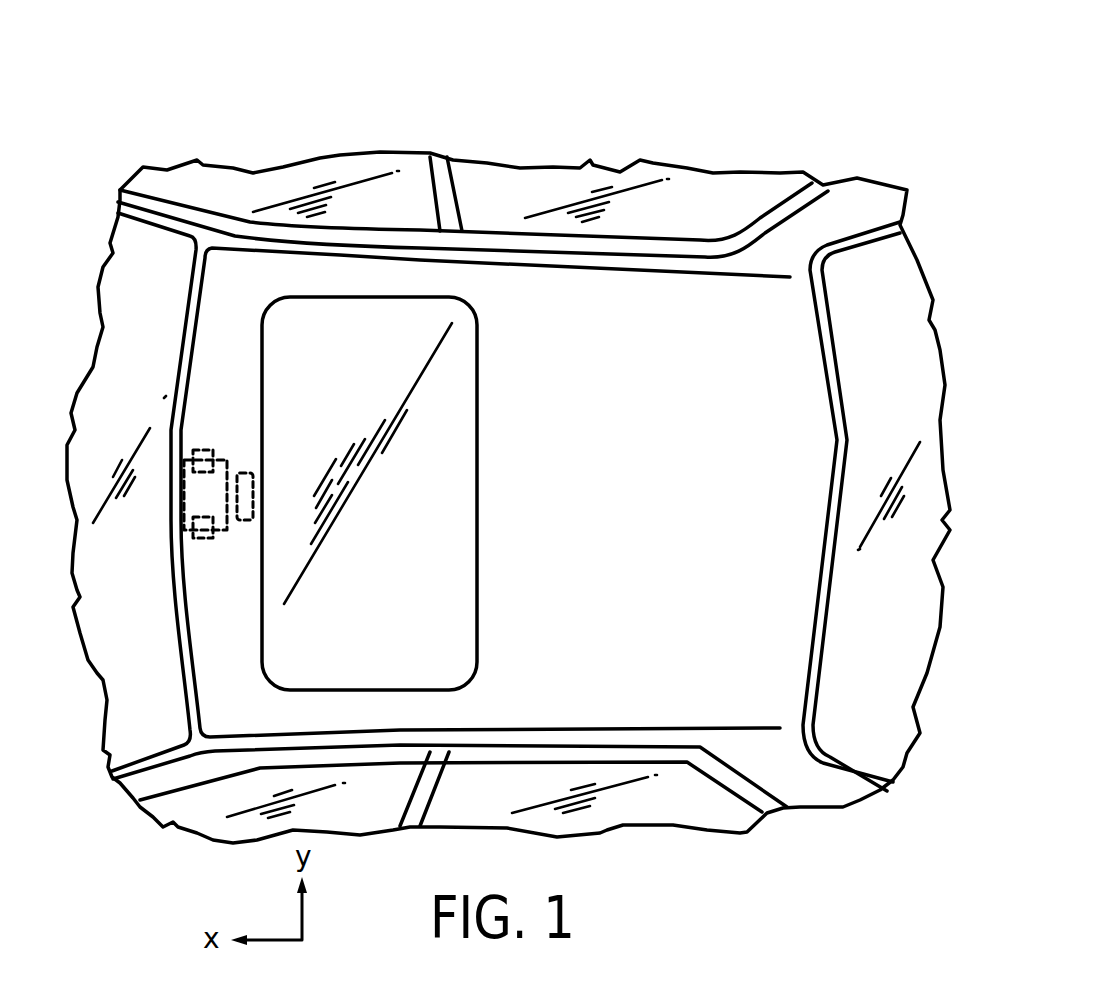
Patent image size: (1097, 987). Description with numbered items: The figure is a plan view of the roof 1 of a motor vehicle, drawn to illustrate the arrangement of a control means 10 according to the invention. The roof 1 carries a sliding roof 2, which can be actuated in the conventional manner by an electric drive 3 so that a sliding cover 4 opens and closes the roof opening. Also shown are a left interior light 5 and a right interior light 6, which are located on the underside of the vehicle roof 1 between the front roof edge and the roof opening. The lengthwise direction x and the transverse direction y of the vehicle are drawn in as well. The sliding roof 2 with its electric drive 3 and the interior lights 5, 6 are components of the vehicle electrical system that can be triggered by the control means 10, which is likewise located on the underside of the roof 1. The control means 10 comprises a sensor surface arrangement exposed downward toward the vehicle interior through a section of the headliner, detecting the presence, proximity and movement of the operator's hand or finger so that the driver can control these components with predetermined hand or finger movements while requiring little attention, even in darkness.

The roof 1 is at (633, 357).
The sliding roof 2 is at (370, 282).
The electric drive 3 is at (244, 473).
The sliding cover 4 is at (437, 519).
The left interior light 5 is at (204, 539).
The right interior light 6 is at (205, 451).
The control means 10 is at (185, 501).